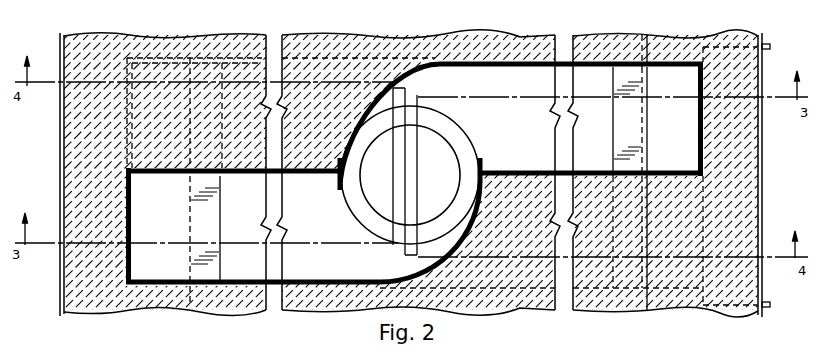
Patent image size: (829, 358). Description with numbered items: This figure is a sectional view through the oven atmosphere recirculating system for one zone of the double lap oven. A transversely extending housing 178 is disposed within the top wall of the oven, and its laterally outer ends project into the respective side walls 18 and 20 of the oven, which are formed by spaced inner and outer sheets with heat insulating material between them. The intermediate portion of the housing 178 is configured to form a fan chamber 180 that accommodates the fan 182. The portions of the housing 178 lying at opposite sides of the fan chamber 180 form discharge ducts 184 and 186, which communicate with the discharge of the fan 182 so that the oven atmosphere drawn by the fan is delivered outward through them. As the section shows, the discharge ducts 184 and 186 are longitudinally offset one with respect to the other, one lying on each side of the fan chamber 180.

The side wall 18 is at (55, 153).
The side wall 20 is at (764, 185).
The transversely extending housing 178 is at (509, 78).
The fan chamber 180 is at (393, 107).
The fan 182 is at (460, 144).
The discharge duct 184 is at (301, 230).
The discharge duct 186 is at (511, 157).